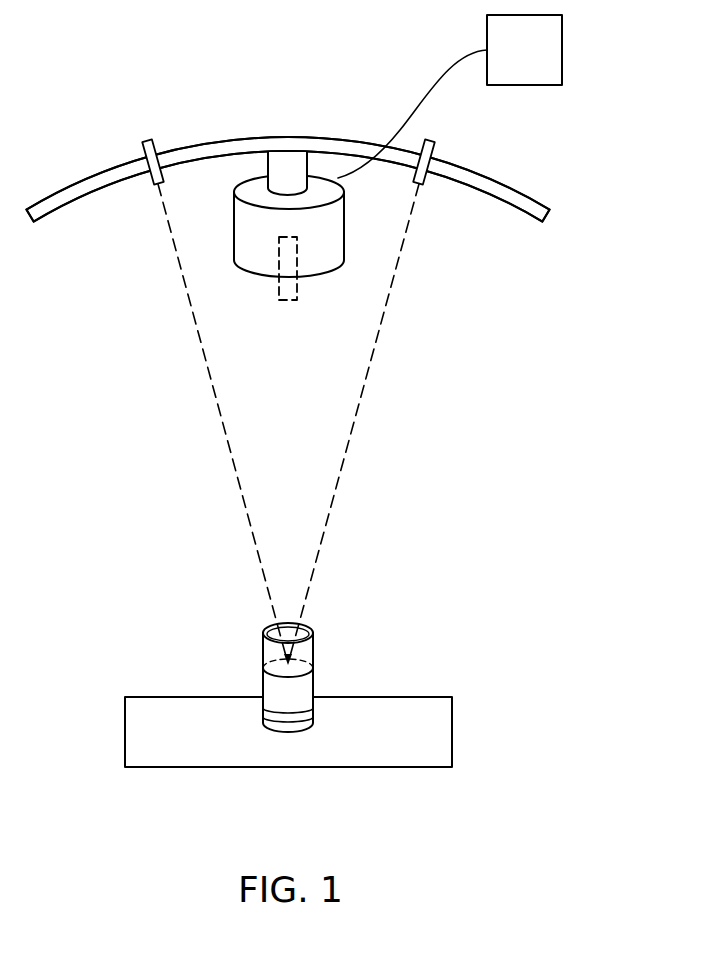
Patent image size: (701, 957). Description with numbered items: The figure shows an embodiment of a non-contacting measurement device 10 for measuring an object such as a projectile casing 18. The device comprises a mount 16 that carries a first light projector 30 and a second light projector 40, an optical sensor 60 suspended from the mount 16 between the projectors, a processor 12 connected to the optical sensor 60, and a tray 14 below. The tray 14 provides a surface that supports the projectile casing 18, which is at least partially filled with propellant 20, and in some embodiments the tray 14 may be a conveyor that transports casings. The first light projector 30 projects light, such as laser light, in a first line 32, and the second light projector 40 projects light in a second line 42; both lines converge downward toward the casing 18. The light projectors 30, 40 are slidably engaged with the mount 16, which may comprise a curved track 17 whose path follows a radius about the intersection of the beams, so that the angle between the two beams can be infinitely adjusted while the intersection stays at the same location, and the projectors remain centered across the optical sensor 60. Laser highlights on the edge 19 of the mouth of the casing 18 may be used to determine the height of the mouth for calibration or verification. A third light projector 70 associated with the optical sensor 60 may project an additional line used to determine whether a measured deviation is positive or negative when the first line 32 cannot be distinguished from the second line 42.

The measurement device 10 is at (117, 89).
The processor 12 is at (564, 48).
The tray 14 is at (452, 748).
The mount 16 is at (289, 137).
The curved track 17 is at (71, 181).
The projectile casing 18 is at (264, 633).
The edge of the mouth of the casing 19 is at (313, 627).
The propellant 20 is at (276, 662).
The first light projector 30 is at (156, 185).
The first line 32 is at (238, 563).
The second light projector 40 is at (424, 186).
The second line 42 is at (339, 561).
The optical sensor 60 is at (258, 278).
The third light projector 70 is at (298, 293).